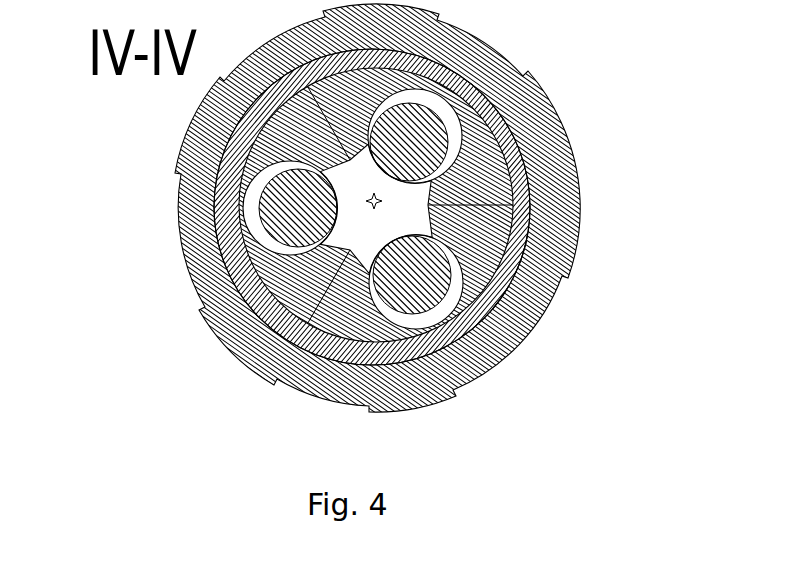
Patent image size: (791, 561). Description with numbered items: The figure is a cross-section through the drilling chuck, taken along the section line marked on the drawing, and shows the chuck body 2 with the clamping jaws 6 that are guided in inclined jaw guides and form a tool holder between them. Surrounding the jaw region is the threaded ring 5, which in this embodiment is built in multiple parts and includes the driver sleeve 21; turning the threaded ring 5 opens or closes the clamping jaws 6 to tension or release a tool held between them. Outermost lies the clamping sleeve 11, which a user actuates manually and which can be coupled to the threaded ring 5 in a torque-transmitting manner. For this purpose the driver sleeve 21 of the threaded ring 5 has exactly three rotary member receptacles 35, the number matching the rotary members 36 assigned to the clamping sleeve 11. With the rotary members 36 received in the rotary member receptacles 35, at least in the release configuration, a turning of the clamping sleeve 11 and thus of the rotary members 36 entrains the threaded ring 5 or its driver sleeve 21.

The chuck body 2 is at (488, 163).
The threaded ring 5 is at (395, 280).
The clamping jaws 6 is at (412, 130).
The clamping sleeve 11 is at (213, 276).
The driver sleeve 21 is at (400, 358).
The rotary member receptacle 35 is at (533, 252).
The rotary member 36 is at (495, 296).